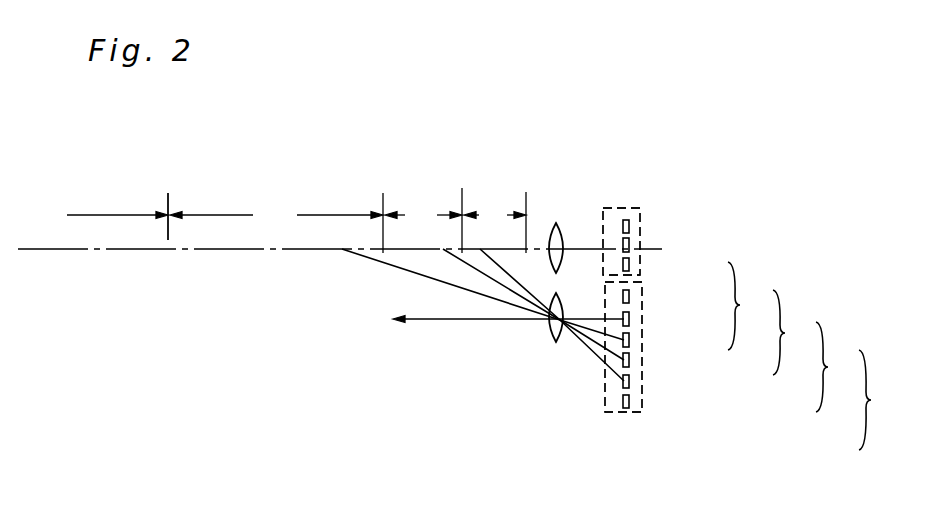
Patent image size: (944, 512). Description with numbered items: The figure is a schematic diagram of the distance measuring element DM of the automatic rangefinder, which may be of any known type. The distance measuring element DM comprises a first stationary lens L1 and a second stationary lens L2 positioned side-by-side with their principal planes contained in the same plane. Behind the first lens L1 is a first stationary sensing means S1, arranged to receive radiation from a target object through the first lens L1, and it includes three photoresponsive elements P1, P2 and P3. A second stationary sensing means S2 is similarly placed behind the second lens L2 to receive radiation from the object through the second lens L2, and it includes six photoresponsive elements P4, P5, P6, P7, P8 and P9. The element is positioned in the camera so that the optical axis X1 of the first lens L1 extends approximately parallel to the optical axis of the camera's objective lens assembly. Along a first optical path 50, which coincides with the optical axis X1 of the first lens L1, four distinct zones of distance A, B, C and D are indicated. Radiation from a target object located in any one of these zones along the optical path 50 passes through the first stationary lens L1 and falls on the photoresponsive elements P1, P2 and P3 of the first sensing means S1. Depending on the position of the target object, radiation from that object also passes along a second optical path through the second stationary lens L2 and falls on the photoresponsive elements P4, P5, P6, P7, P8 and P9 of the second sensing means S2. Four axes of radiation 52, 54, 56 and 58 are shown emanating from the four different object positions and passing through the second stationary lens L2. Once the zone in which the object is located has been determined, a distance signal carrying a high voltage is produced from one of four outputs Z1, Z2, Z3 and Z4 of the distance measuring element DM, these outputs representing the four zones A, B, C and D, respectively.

The first optical path 50 is at (317, 249).
The axis of radiation 52 is at (512, 277).
The axis of radiation 54 is at (483, 274).
The axis of radiation 56 is at (450, 286).
The axis of radiation 58 is at (422, 323).
The first stationary lens L1 is at (556, 222).
The second stationary lens L2 is at (556, 345).
The first stationary sensing means S1 is at (620, 206).
The second stationary sensing means S2 is at (618, 414).
The distance measuring element DM is at (662, 163).
The photoresponsive element P1 is at (629, 226).
The photoresponsive element P2 is at (629, 245).
The photoresponsive element P3 is at (629, 264).
The photoresponsive element P4 is at (629, 296).
The photoresponsive element P5 is at (629, 319).
The photoresponsive element P6 is at (629, 340).
The photoresponsive element P7 is at (629, 360).
The photoresponsive element P8 is at (629, 381).
The photoresponsive element P9 is at (629, 402).
The output Z1 is at (884, 400).
The output Z2 is at (840, 367).
The output Z3 is at (797, 332).
The output Z4 is at (752, 306).
The optical axis X1 is at (195, 249).
The zone of distance A is at (495, 222).
The zone of distance B is at (423, 220).
The zone of distance C is at (276, 223).
The zone of distance D is at (104, 216).